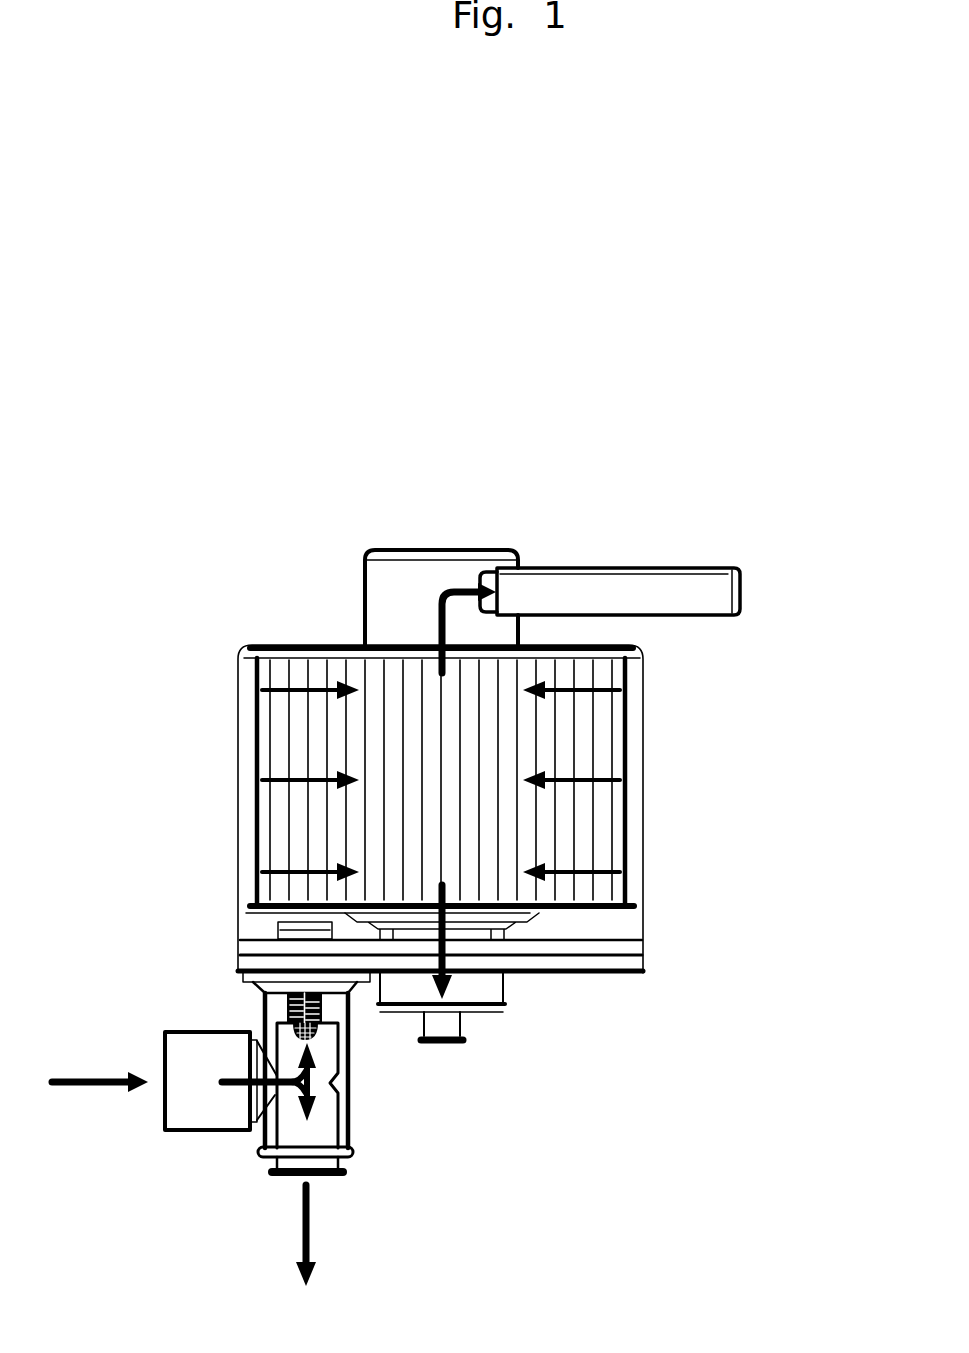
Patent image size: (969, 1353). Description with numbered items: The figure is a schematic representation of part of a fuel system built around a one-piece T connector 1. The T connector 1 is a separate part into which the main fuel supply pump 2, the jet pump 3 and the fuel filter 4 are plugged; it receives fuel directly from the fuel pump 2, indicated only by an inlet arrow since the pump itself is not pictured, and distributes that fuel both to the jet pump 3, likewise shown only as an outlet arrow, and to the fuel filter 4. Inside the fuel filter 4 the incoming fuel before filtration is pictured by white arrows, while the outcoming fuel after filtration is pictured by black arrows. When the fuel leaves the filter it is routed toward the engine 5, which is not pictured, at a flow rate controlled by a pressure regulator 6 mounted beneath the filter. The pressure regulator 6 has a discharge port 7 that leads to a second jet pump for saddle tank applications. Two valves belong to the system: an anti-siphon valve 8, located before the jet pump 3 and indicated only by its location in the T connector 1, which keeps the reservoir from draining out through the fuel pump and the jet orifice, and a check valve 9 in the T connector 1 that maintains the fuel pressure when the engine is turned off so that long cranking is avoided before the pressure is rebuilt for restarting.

The T connector 1 is at (257, 1124).
The fuel pump 2 is at (84, 1082).
The jet pump 3 is at (306, 1260).
The fuel filter 4 is at (625, 760).
The engine 5 is at (755, 592).
The pressure regulator 6 is at (497, 1013).
The discharge port 7 is at (450, 1043).
The anti-siphon valve 8 is at (348, 1120).
The check valve 9 is at (283, 1005).